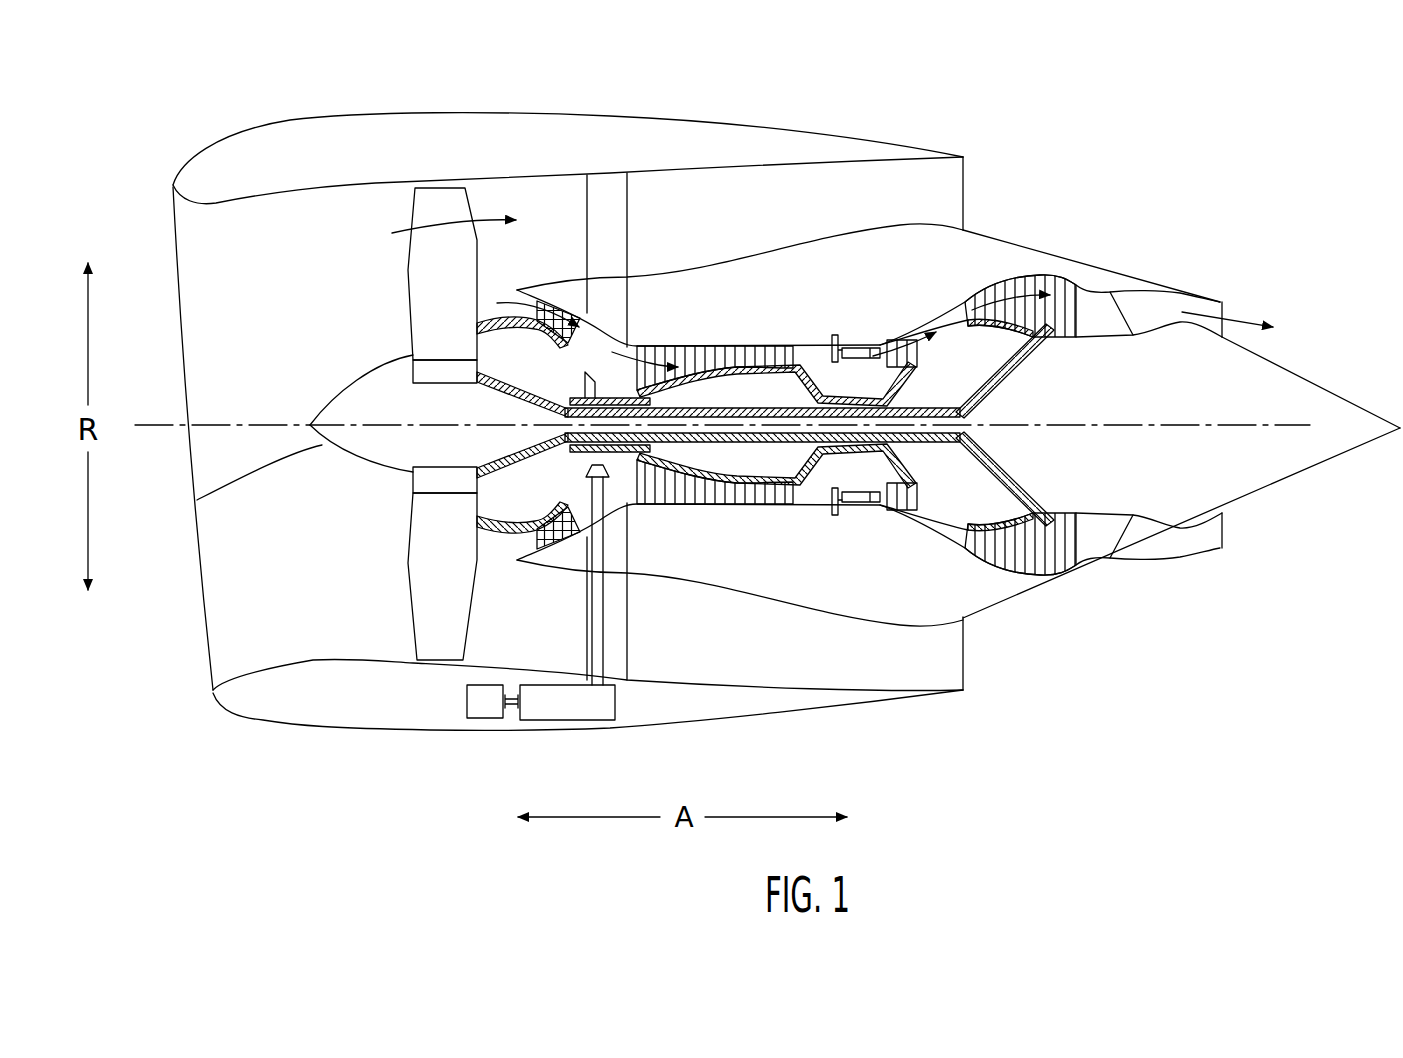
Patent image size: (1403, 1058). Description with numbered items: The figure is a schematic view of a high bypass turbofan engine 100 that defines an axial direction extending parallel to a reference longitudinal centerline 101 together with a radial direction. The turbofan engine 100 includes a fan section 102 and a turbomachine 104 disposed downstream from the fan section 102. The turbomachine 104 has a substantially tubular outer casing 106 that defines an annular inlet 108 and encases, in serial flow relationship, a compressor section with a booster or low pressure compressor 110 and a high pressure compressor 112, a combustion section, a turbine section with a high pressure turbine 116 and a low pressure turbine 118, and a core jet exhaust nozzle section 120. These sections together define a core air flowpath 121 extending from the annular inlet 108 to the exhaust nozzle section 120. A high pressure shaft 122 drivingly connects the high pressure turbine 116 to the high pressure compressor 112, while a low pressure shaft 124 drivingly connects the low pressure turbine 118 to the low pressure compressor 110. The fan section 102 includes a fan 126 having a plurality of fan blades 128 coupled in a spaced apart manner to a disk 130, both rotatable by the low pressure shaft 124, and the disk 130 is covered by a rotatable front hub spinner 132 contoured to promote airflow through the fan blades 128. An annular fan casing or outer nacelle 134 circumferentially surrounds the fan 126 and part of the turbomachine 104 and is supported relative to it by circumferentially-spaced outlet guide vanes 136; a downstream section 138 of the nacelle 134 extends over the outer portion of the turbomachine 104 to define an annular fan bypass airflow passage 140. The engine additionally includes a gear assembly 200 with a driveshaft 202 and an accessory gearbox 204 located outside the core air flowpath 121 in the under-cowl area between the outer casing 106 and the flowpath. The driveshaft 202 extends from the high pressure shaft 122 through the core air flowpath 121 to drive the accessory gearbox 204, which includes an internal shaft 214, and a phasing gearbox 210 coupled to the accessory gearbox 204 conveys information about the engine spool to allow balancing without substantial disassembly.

The turbofan engine 100 is at (767, 410).
The longitudinal centerline 101 is at (1188, 425).
The fan section 102 is at (363, 205).
The turbomachine 104 is at (748, 225).
The outer casing 106 is at (812, 612).
The annular inlet 108 is at (526, 545).
The low pressure compressor 110 is at (562, 564).
The high pressure compressor 112 is at (663, 495).
The high pressure turbine 116 is at (927, 507).
The low pressure turbine 118 is at (1058, 574).
The core jet exhaust nozzle section 120 is at (1128, 542).
The core air flowpath 121 is at (610, 509).
The high pressure shaft 122 is at (855, 365).
The low pressure shaft 124 is at (918, 403).
The fan 126 is at (350, 288).
The fan blades 128 is at (408, 595).
The disk 130 is at (428, 373).
The front hub spinner 132 is at (197, 500).
The outer nacelle 134 is at (433, 733).
The outlet guide vanes 136 is at (627, 210).
The downstream section of the nacelle 138 is at (885, 146).
The annular fan bypass airflow passage 140 is at (1003, 198).
The gear assembly 200 is at (574, 625).
The driveshaft 202 is at (588, 646).
The accessory gearbox 204 is at (570, 710).
The phasing gearbox 210 is at (482, 708).
The internal shaft 214 is at (853, 497).